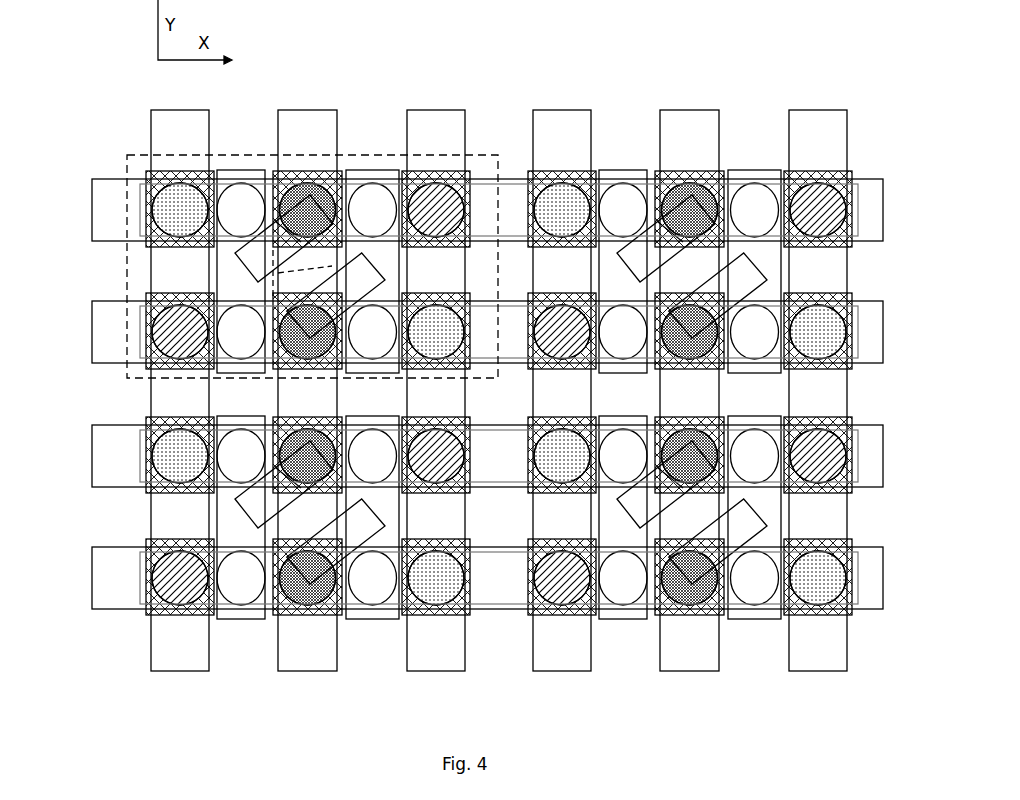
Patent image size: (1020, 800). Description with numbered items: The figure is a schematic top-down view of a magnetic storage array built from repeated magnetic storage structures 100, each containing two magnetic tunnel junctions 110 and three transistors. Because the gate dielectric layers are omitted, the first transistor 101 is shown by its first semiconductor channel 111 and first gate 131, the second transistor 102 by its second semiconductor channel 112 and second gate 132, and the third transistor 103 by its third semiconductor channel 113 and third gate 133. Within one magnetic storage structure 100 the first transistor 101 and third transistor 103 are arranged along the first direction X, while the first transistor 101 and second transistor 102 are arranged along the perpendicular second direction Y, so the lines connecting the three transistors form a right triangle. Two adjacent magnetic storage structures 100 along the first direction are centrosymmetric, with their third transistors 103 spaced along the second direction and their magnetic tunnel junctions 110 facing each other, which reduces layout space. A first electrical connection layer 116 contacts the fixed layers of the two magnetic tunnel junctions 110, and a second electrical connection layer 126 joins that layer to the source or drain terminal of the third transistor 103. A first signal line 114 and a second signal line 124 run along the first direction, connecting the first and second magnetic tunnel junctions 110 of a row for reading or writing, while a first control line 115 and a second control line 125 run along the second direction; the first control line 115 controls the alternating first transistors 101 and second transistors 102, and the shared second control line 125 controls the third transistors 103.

The magnetic storage structure 100 is at (136, 152).
The first transistor 101 is at (95, 142).
The second transistor 102 is at (95, 281).
The third transistor 103 is at (368, 72).
The magnetic tunnel junction 110 is at (623, 210).
The first semiconductor channel 111 is at (172, 207).
The second semiconductor channel 112 is at (175, 327).
The third semiconductor channel 113 is at (322, 197).
The first signal line 114 is at (862, 197).
The first control line 115 is at (182, 632).
The first electrical connection layer 116 is at (262, 257).
The second signal line 124 is at (862, 330).
The second control line 125 is at (312, 632).
The second electrical connection layer 126 is at (228, 172).
The first gate 131 is at (145, 172).
The second gate 132 is at (163, 368).
The third gate 133 is at (281, 190).